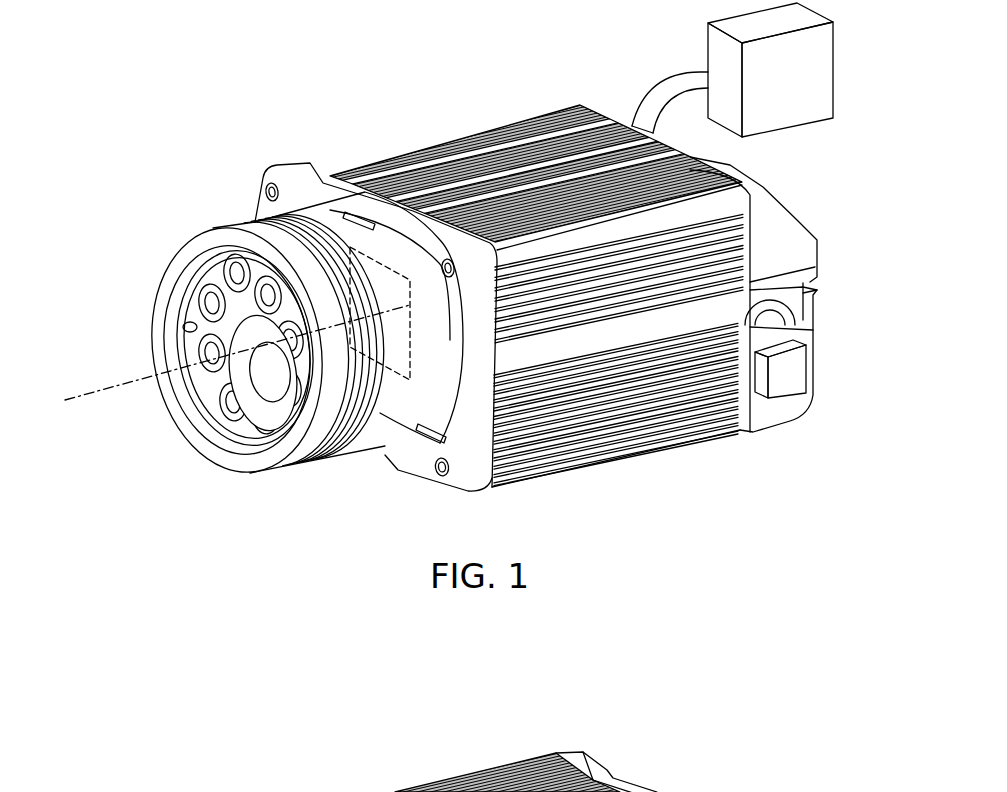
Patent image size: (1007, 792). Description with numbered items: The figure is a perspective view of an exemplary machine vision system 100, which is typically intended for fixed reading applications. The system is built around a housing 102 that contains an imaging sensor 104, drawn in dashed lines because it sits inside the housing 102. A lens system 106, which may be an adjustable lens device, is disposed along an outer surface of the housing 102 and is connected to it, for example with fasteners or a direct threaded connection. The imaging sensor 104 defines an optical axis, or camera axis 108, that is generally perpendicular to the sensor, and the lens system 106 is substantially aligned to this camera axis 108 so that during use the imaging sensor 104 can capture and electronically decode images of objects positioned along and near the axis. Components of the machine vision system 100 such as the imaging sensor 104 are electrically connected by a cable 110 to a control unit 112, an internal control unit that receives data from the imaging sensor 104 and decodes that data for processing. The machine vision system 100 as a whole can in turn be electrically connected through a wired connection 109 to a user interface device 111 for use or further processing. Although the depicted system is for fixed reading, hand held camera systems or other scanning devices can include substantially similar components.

The machine vision system 100 is at (469, 255).
The housing 102 is at (473, 468).
The imaging sensor 104 is at (355, 450).
The lens system 106 is at (185, 303).
The optical axis 108 is at (115, 381).
The wired connection 109 is at (665, 80).
The cable 110 is at (803, 300).
The user interface device 111 is at (797, 112).
The control unit 112 is at (797, 375).